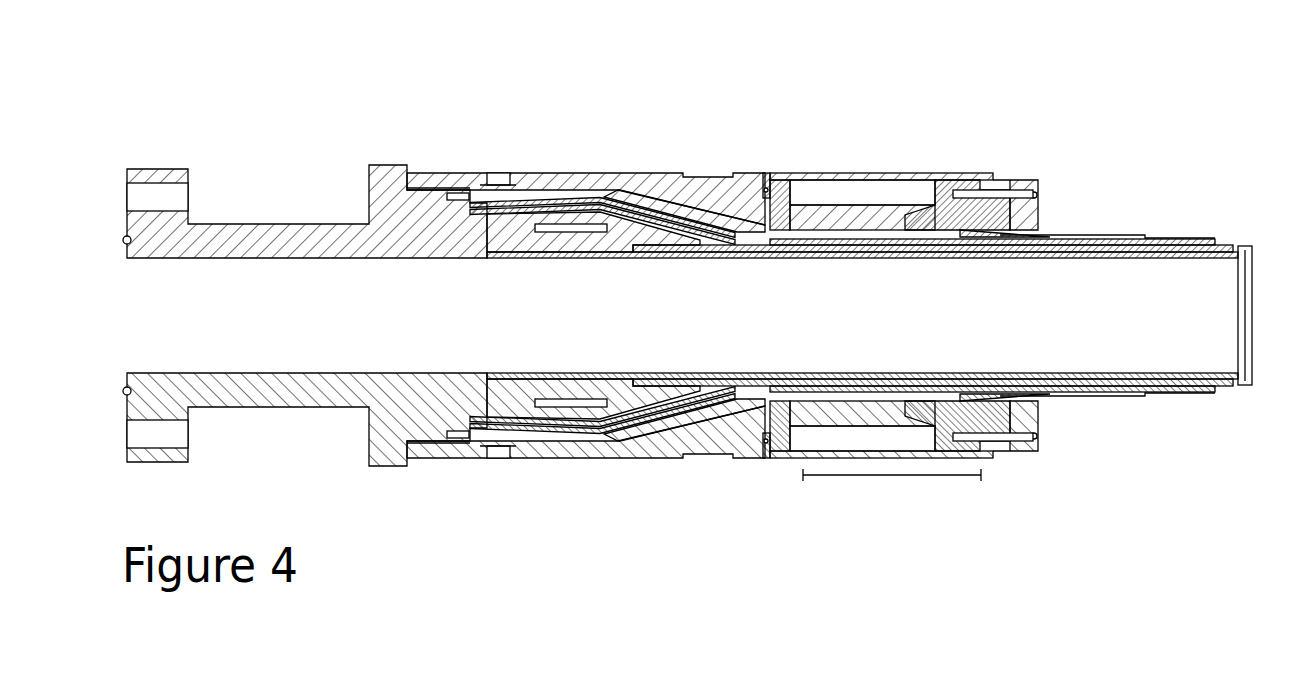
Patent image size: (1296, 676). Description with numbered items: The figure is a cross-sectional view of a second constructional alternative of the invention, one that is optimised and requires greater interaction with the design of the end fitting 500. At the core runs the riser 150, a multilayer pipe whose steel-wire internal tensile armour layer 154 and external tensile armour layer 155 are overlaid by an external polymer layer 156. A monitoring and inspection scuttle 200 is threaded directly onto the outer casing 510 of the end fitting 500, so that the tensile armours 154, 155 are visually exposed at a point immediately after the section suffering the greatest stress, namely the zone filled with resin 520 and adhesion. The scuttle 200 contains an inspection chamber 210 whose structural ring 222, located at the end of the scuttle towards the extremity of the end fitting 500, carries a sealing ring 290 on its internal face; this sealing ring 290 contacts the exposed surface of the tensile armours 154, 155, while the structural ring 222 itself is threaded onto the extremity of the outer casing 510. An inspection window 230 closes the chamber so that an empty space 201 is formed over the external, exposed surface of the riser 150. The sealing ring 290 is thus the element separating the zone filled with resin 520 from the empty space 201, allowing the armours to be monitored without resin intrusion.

The end fitting 500 is at (383, 176).
The outer casing 510 is at (645, 175).
The zone filled with resin 520 is at (733, 215).
The internal tensile armour layer 154 is at (566, 200).
The external tensile armour layer 155 is at (621, 205).
The riser 150 is at (1212, 288).
The external polymer layer 156 is at (1047, 233).
The monitoring and inspection scuttle 200 is at (978, 505).
The empty space 201 is at (862, 195).
The structural ring 222 is at (795, 212).
The sealing ring 290 is at (768, 197).
The inspection window 230 is at (940, 176).
The inspection chamber 210 is at (892, 493).